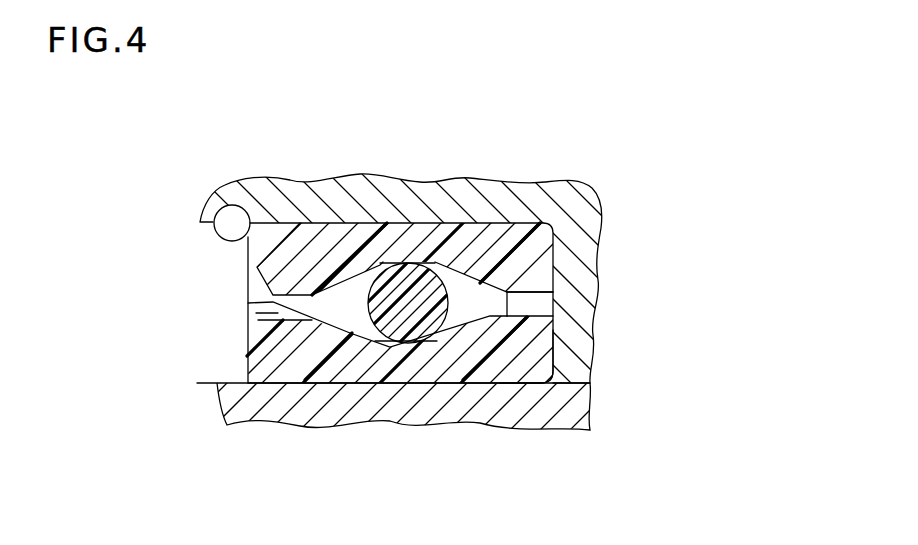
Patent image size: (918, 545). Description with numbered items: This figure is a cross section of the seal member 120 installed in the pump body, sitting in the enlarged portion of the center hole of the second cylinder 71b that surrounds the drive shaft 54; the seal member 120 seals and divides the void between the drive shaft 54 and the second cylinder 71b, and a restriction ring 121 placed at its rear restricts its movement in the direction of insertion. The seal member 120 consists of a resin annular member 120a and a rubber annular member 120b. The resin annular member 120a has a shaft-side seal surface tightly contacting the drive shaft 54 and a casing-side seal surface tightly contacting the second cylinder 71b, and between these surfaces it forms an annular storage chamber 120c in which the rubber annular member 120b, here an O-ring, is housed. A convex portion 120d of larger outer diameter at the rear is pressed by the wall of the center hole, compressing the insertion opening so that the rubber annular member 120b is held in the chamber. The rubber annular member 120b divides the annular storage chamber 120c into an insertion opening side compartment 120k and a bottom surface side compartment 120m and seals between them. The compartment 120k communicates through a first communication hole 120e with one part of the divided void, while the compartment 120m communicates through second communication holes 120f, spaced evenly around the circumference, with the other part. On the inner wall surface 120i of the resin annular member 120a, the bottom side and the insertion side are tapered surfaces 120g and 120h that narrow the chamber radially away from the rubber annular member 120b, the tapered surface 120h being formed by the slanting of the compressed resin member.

The second cylinder 71b is at (583, 206).
The drive shaft 54 is at (578, 407).
The restriction ring 121 is at (217, 236).
The seal member 120 is at (558, 330).
The resin annular member 120a is at (467, 237).
The rubber annular member 120b is at (398, 332).
The annular storage chamber 120c is at (357, 295).
The convex portion 120d is at (267, 233).
The first communication hole 120e is at (337, 350).
The second communication hole 120f is at (547, 300).
The tapered surface 120g is at (483, 287).
The tapered surface 120h is at (335, 296).
The inner wall surface 120i is at (372, 262).
The insertion opening side compartment 120k is at (337, 323).
The bottom surface side compartment 120m is at (550, 363).